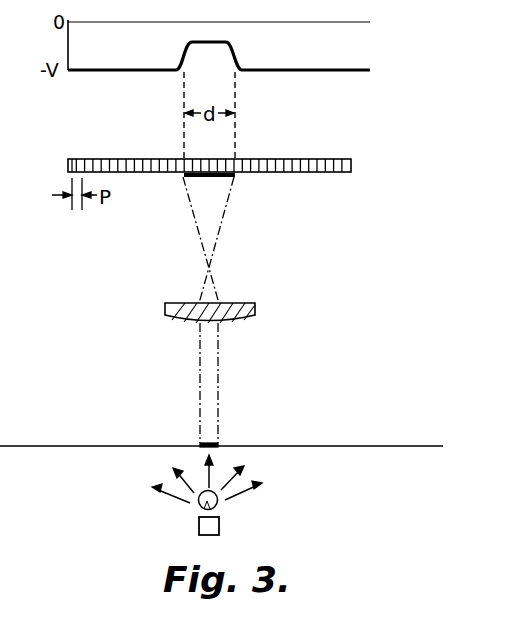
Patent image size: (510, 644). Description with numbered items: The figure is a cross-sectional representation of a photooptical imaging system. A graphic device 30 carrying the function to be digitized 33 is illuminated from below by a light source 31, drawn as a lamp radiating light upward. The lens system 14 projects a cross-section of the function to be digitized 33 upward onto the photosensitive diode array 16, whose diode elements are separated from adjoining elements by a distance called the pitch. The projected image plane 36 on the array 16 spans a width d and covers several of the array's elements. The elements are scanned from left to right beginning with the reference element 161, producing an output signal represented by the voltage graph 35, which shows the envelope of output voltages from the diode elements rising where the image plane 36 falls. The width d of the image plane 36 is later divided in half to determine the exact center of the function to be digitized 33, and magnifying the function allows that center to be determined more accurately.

The lens system 14 is at (234, 324).
The diode array 16 is at (286, 158).
The reference element 161 is at (72, 159).
The graphic device 30 is at (305, 445).
The light source 31 is at (209, 497).
The function to be digitized 33 is at (208, 443).
The voltage graph 35 is at (110, 70).
The image plane 36 is at (236, 175).